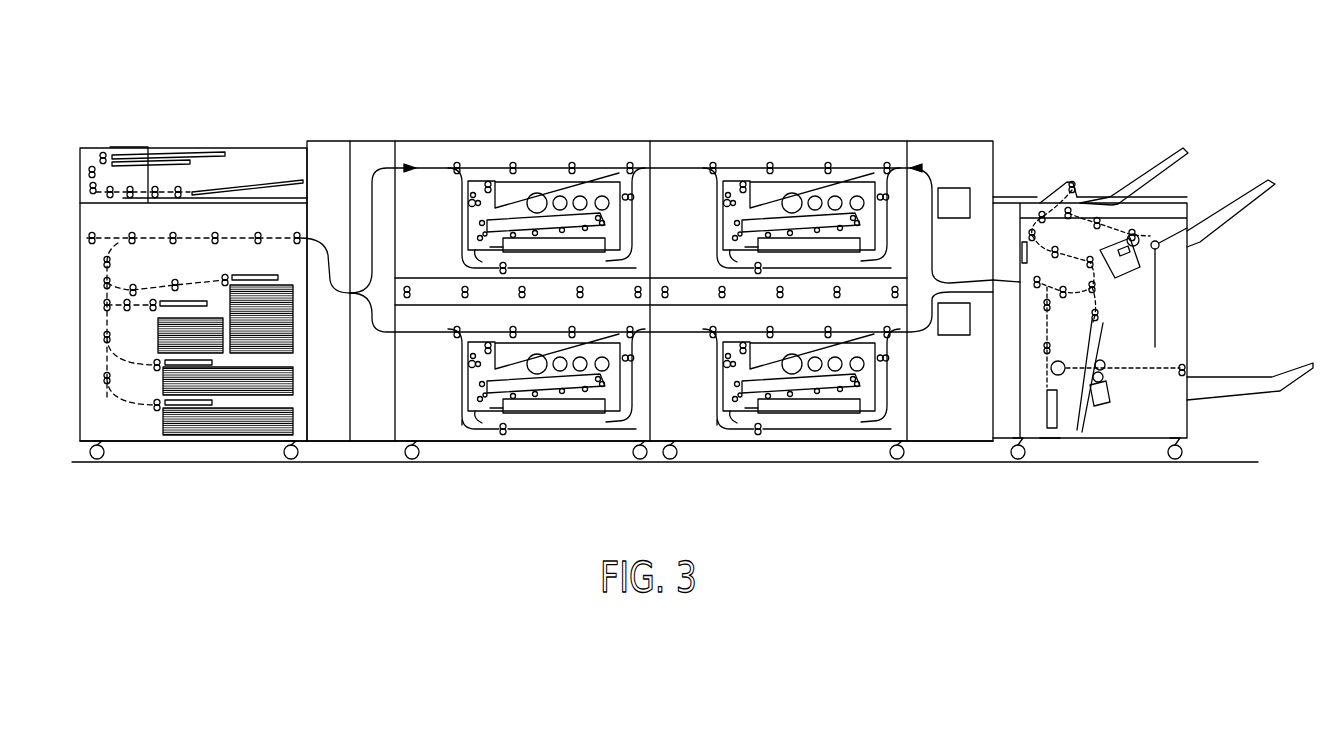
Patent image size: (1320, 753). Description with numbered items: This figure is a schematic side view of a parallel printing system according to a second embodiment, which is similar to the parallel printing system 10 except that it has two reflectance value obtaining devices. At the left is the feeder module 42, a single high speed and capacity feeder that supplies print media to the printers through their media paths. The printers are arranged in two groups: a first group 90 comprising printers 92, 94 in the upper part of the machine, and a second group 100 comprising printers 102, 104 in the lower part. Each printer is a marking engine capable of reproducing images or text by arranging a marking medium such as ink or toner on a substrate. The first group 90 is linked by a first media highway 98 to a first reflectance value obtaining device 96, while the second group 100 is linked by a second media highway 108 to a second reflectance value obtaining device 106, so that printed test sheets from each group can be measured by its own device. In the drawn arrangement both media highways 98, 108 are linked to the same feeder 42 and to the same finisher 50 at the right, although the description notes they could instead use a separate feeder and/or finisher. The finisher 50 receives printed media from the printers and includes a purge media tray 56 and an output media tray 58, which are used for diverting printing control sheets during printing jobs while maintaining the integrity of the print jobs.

The parallel printing system 10 is at (168, 137).
The feeder module 42 is at (82, 313).
The finisher 50 is at (1088, 182).
The purge media tray 56 is at (1045, 428).
The output media tray 58 is at (1145, 170).
The first group 90 is at (533, 150).
The printer 92 is at (483, 187).
The printer 94 is at (758, 185).
The first reflectance value obtaining device 96 is at (952, 188).
The first media highway 98 is at (930, 238).
The second group 100 is at (467, 428).
The printer 102 is at (465, 393).
The printer 104 is at (805, 415).
The second reflectance value obtaining device 106 is at (958, 335).
The second media highway 108 is at (912, 330).